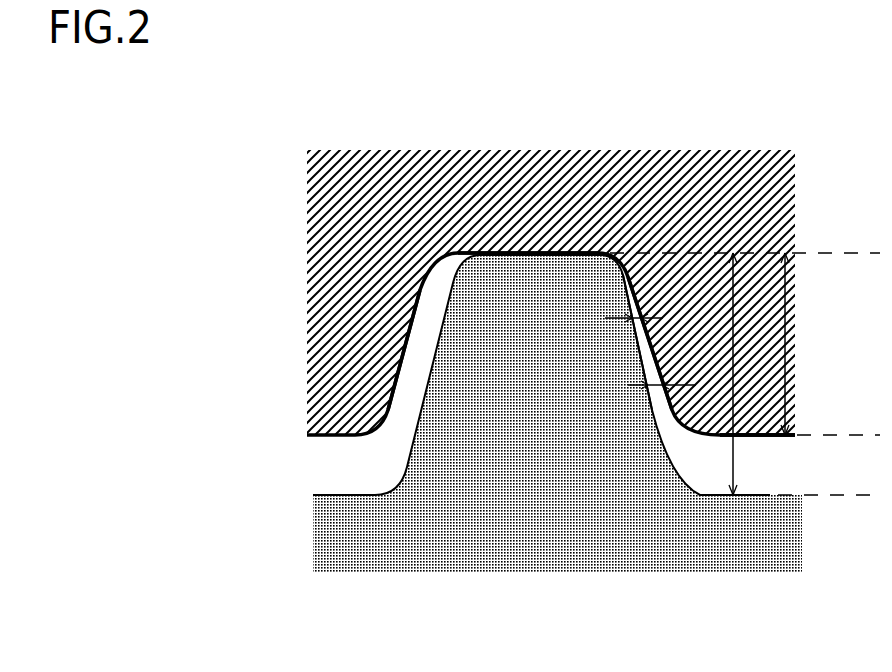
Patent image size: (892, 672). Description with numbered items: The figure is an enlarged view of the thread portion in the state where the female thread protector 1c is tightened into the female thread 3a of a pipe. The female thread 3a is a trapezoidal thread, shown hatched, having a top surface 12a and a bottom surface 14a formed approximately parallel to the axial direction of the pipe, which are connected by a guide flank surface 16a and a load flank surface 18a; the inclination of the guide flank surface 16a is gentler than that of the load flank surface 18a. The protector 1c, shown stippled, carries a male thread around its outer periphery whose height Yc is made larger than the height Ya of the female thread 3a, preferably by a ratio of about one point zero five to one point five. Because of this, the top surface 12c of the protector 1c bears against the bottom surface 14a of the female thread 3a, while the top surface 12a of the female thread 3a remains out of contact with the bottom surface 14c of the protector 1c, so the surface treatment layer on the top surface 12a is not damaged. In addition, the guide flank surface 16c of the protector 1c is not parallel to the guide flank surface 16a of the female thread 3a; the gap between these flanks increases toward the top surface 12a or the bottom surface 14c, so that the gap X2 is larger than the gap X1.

The female thread 3a is at (504, 150).
The female thread protector 1c is at (538, 576).
The top surface of the protector 12c is at (510, 242).
The top surface of the female thread 12a is at (748, 436).
The bottom surface of the female thread 14a is at (557, 255).
The bottom surface of the protector 14c is at (716, 495).
The guide flank surface of the female thread 16a is at (682, 401).
The guide flank surface of the protector 16c is at (652, 421).
The load flank surface 18a is at (413, 319).
The gap between guide flank surfaces X1 is at (634, 304).
The gap between guide flank surfaces X2 is at (666, 375).
The height of the thread of the protector Yc is at (746, 374).
The height of the thread of the female thread Ya is at (796, 344).